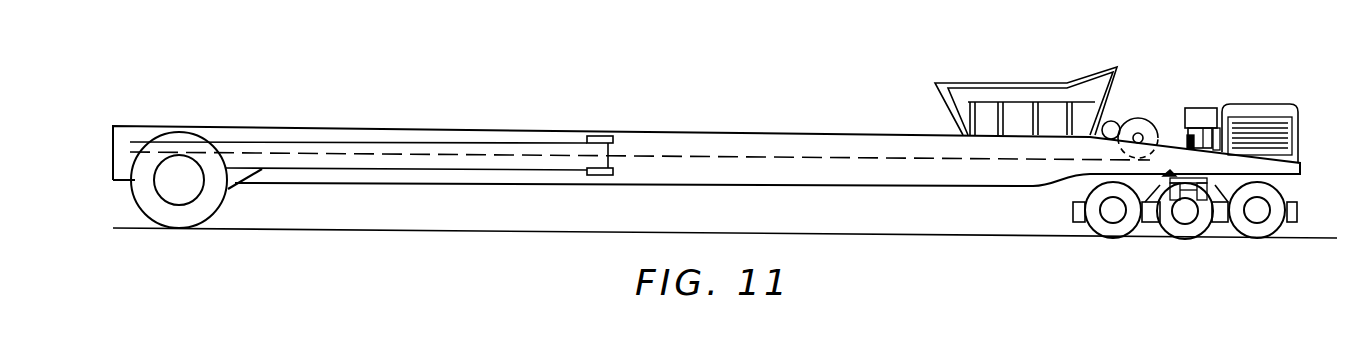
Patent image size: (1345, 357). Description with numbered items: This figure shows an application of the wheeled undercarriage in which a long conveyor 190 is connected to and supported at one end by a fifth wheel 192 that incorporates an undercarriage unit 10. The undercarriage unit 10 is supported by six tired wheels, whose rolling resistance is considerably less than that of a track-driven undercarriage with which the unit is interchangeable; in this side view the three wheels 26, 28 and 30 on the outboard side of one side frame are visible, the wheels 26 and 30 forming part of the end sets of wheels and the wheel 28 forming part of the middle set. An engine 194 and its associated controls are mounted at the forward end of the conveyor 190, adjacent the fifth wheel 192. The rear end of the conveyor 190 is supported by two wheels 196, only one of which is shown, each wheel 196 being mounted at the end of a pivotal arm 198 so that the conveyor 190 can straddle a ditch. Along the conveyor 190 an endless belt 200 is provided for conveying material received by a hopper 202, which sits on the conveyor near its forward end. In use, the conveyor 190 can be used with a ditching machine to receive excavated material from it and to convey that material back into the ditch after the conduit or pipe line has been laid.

The undercarriage unit 10 is at (1299, 213).
The wheel 26 is at (1110, 225).
The wheel 28 is at (1178, 226).
The wheel 30 is at (1255, 225).
The conveyor 190 is at (715, 142).
The fifth wheel 192 is at (1304, 189).
The engine 194 is at (1260, 133).
The wheel 196 is at (217, 198).
The pivotal arm 198 is at (419, 177).
The endless belt 200 is at (845, 156).
The hopper 202 is at (1025, 100).